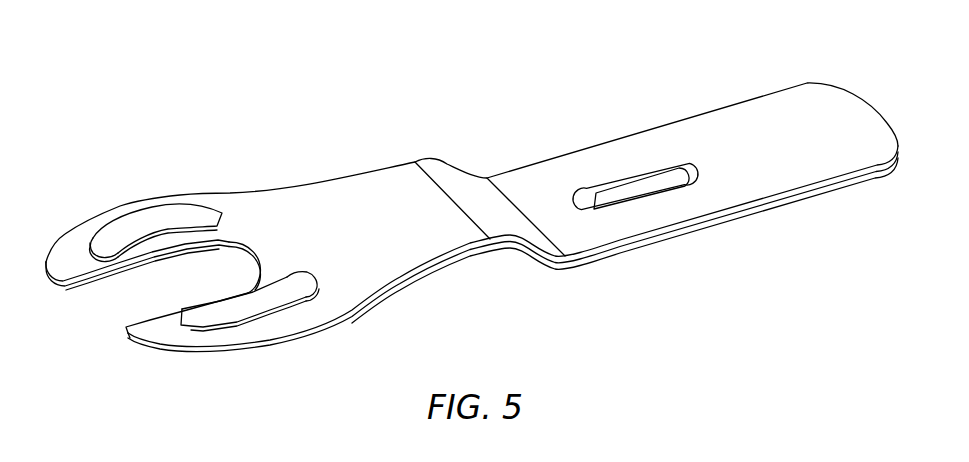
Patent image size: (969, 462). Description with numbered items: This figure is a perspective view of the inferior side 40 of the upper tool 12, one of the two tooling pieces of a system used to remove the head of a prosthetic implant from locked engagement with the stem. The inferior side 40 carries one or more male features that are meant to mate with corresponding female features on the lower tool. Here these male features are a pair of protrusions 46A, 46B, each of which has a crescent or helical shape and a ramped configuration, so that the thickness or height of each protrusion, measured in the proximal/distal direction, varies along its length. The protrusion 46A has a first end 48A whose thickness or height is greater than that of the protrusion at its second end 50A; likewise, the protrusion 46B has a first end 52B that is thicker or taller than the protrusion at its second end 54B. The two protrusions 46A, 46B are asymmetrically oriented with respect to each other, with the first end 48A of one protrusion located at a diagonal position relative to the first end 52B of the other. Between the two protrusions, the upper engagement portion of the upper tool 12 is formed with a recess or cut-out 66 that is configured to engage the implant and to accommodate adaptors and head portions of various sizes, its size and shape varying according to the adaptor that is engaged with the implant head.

The upper tool 12 is at (412, 78).
The inferior side 40 is at (370, 184).
The protrusion 46A is at (148, 219).
The protrusion 46B is at (263, 310).
The first end 48A is at (103, 240).
The second end 50A is at (208, 218).
The first end 52B is at (307, 276).
The second end 54B is at (190, 314).
The recess or cut-out 66 is at (108, 306).